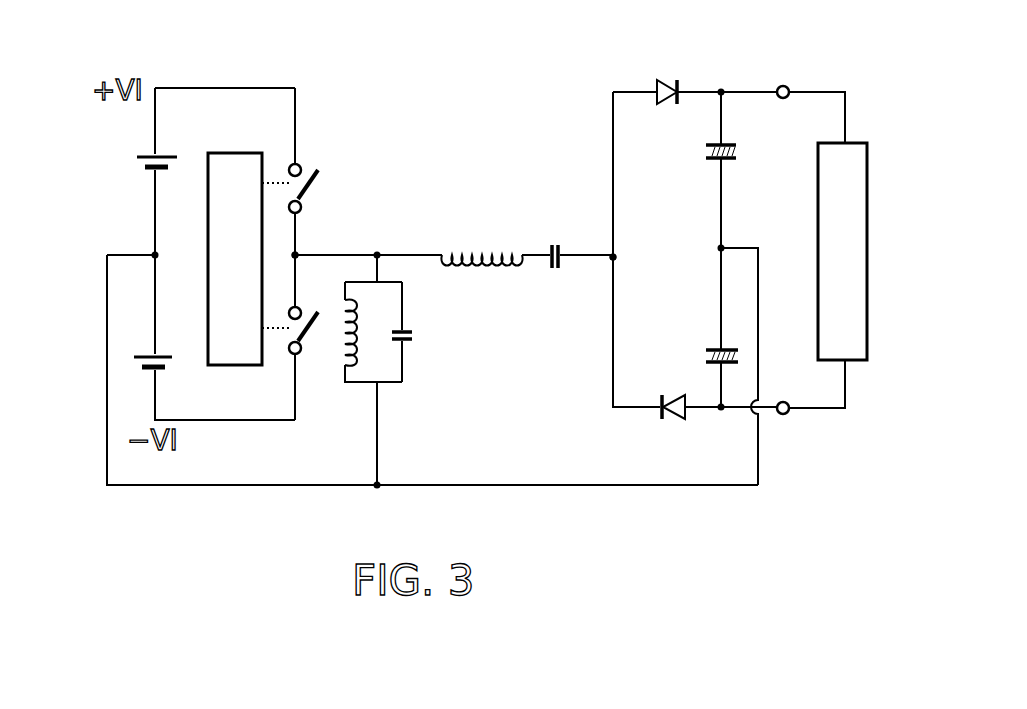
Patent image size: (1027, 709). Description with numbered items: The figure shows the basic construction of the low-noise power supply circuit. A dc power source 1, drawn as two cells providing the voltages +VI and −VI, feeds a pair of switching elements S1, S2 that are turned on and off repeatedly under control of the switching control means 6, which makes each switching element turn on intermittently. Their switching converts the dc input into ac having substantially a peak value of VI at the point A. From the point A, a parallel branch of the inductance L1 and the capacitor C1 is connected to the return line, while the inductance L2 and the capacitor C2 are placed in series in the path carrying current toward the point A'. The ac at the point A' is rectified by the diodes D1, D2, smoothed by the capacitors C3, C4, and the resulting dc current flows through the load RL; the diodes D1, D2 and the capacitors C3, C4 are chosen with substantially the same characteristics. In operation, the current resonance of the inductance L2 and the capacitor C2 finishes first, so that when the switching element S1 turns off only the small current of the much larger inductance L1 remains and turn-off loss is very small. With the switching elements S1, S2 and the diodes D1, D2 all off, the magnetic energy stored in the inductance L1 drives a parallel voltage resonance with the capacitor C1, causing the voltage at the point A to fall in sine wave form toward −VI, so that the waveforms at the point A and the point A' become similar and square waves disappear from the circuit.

The dc power source 1 is at (138, 169).
The switching control means 6 is at (226, 155).
The switching element S1 is at (316, 181).
The switching element S2 is at (307, 333).
The point A is at (338, 207).
The point A' is at (580, 310).
The inductance L1 is at (358, 345).
The inductance L2 is at (474, 255).
The capacitor C1 is at (412, 340).
The capacitor C2 is at (556, 245).
The capacitor C3 is at (732, 160).
The capacitor C4 is at (715, 348).
The diode D1 is at (666, 83).
The diode D2 is at (678, 395).
The load RL is at (842, 251).